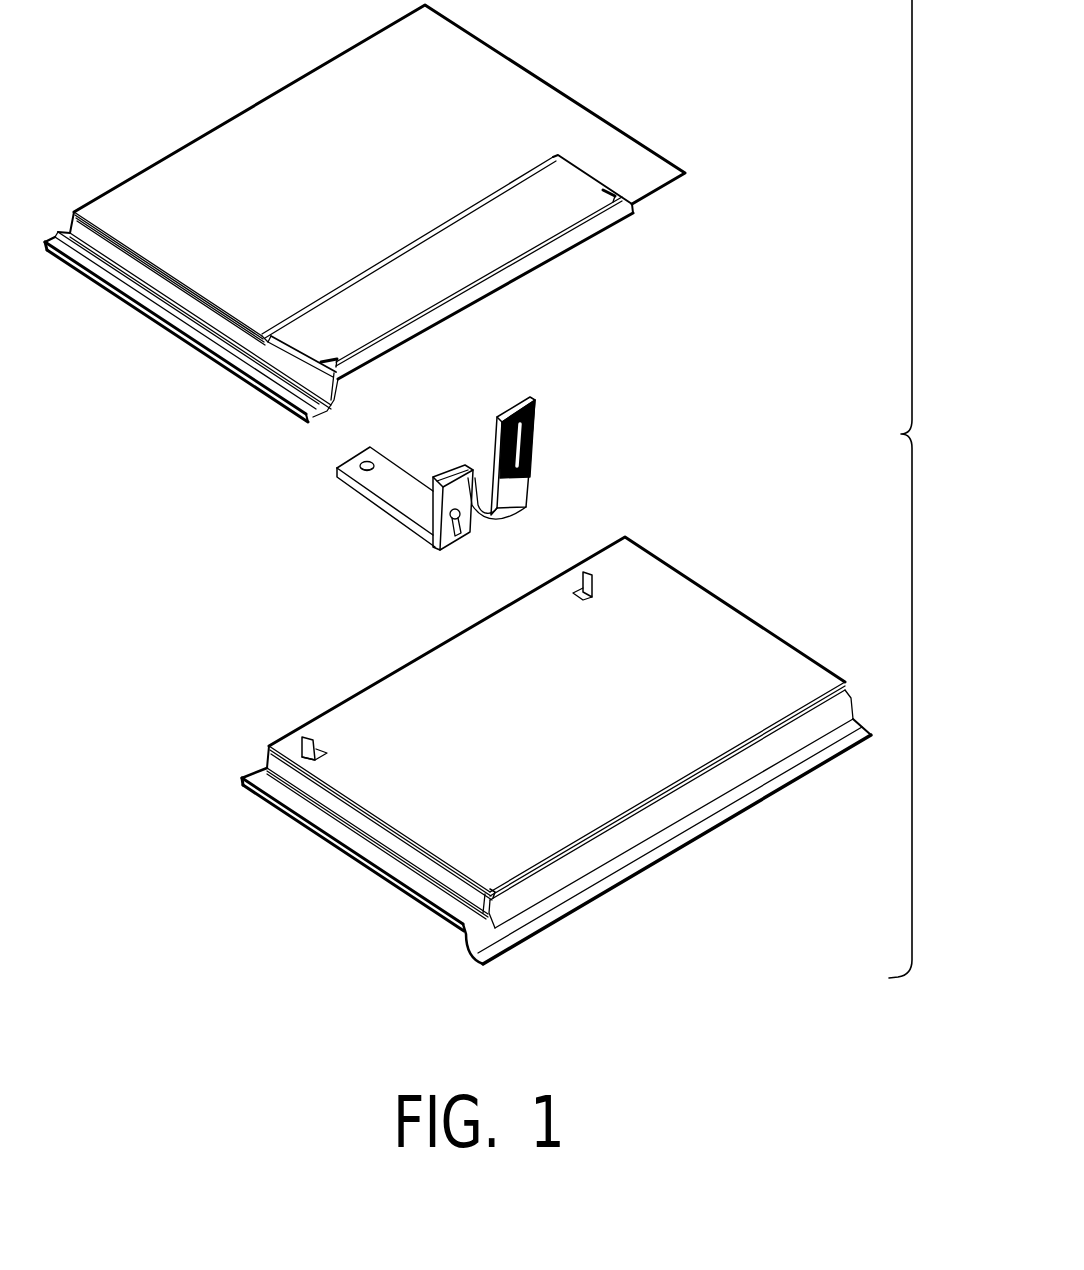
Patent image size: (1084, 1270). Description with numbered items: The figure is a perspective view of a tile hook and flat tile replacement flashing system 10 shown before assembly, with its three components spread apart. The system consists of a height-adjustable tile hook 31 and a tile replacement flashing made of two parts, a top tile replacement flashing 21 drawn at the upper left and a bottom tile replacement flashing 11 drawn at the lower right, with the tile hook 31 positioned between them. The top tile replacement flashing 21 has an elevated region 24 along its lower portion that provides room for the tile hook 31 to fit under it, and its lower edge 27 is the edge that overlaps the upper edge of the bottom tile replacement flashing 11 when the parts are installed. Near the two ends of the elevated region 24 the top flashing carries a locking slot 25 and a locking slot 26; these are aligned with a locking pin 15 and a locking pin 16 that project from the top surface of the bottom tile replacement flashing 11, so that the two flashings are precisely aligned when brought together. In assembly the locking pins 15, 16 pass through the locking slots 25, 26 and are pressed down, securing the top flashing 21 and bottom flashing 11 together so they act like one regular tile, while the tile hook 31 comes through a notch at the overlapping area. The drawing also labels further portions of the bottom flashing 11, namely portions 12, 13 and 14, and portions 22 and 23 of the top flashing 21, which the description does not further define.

The tile hook and flat tile replacement flashing system 10 is at (927, 489).
The bottom tile replacement flashing 11 is at (408, 630).
The first side flange 12 is at (362, 863).
The first top plate 13 is at (744, 612).
The second side flange 14 is at (663, 847).
The locking pin 15 is at (308, 740).
The locking pin 16 is at (595, 583).
The top tile replacement flashing 21 is at (243, 76).
The side flange of second frame 22 is at (150, 327).
The second top plate 23 is at (566, 94).
The elevated region 24 is at (527, 238).
The locking slot 25 is at (320, 360).
The locking slot 26 is at (608, 190).
The lower edge 27 is at (460, 313).
The tile hook 31 is at (535, 490).